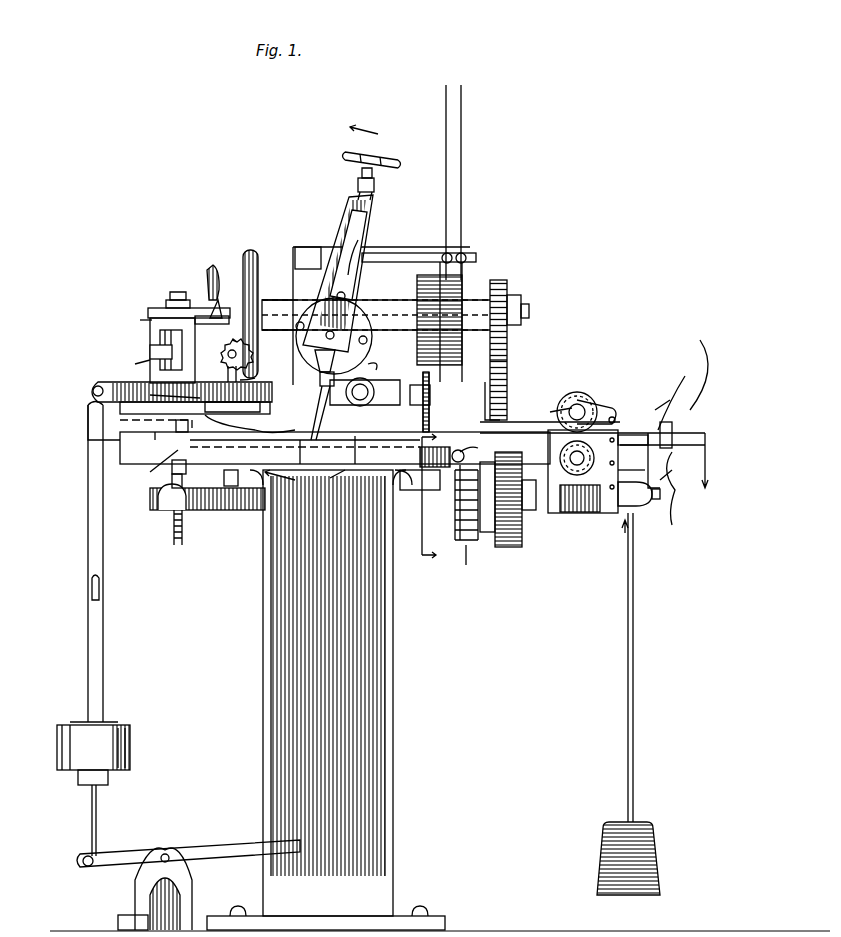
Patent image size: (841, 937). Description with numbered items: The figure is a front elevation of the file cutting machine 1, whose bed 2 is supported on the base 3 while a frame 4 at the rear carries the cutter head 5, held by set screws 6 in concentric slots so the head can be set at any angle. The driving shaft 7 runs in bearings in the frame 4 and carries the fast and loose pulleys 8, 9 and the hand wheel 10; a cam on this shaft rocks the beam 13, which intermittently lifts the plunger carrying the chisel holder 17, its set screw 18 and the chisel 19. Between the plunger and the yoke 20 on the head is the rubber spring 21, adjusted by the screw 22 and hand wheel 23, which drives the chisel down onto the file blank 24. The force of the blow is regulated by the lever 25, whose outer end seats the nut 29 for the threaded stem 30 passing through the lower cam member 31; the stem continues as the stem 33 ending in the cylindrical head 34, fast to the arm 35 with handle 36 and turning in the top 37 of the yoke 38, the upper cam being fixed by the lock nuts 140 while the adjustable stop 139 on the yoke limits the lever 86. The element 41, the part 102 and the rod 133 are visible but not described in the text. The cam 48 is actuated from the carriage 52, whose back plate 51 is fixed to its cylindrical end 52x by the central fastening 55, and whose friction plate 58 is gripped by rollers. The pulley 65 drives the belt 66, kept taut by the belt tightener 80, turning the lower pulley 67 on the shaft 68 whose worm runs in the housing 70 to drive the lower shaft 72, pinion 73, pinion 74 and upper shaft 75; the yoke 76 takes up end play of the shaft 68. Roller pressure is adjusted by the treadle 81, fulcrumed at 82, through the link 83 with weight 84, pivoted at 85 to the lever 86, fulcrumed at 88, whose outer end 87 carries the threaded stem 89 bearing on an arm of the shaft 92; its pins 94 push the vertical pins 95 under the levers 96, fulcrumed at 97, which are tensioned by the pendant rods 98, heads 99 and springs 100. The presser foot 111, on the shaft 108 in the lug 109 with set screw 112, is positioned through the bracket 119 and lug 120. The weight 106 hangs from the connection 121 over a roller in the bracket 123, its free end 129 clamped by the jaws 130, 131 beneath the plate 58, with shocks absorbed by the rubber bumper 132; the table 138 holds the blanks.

The file cutting machine 1 is at (483, 182).
The bed 2 is at (340, 480).
The base 3 is at (390, 618).
The frame 4 is at (329, 311).
The cutter head 5 is at (334, 333).
The set screws 6 is at (296, 330).
The driving shaft 7 is at (270, 292).
The fast pulley 8 is at (376, 320).
The loose pulley 9 is at (462, 274).
The hand wheel 10 is at (250, 256).
The beam 13 is at (440, 495).
The chisel holder 17 is at (290, 368).
The set screw 18 is at (317, 357).
The chisel 19 is at (324, 413).
The yoke 20 is at (358, 232).
The spring 21 is at (350, 248).
The screw 22 is at (356, 190).
The hand wheel 23 is at (393, 158).
The file blank 24 is at (335, 442).
The lever 25 is at (200, 505).
The nut 29 is at (172, 500).
The threaded stem 30 is at (162, 526).
The lower cam member 31 is at (130, 410).
The threaded stem 33 is at (150, 352).
The cylindrical head 34 is at (178, 300).
The arm 35 is at (214, 312).
The handle 36 is at (238, 253).
The top of yoke 37 is at (152, 310).
The yoke 38 is at (150, 340).
The bar 41 is at (212, 327).
The cam 48 is at (250, 438).
The back plate 51 is at (146, 462).
The carriage 52 is at (205, 432).
The end portion of carriage 52x is at (175, 470).
The central axial fastening 55 is at (170, 430).
The friction plate 58 is at (522, 440).
The pulley 65 is at (508, 296).
The belt 66 is at (508, 352).
The lower pulley 67 is at (490, 532).
The shaft 68 is at (520, 544).
The housing 70 is at (610, 514).
The lower shaft 72 is at (642, 465).
The pinion 73 is at (575, 458).
The pinion 74 is at (585, 404).
The shaft 75 is at (600, 410).
The yoke 76 is at (645, 508).
The belt tightener 80 is at (508, 397).
The treadle 81 is at (222, 848).
The fulcrum point 82 is at (165, 848).
The link 83 is at (105, 628).
The weight 84 is at (130, 734).
The pivotal connection 85 is at (88, 393).
The lever 86 is at (130, 400).
The outer end of lever 87 is at (412, 384).
The fulcrum point 88 is at (365, 407).
The threaded stem 89 is at (432, 396).
The shaft 92 is at (438, 470).
The toes, lugs or pins 94 is at (457, 498).
The vertical pins 95 is at (470, 453).
The levers 96 is at (550, 412).
The fulcrum points 97 is at (625, 422).
The pendant rods 98 is at (474, 439).
The head 99 is at (466, 565).
The spring 100 is at (455, 515).
The bracket 102 is at (353, 471).
The weight 106 is at (645, 820).
The shaft 108 is at (174, 395).
The lug 109 is at (232, 398).
The presser foot 111 is at (320, 452).
The set screw 112 is at (225, 372).
The bracket 119 is at (255, 373).
The lug 120 is at (64, 930).
The connection 121 is at (636, 610).
The bracket 123 is at (634, 440).
The free end of connection 129 is at (675, 448).
The upper jaw 130 is at (693, 369).
The lower jaw 131 is at (682, 497).
The rubber bumper 132 is at (686, 394).
The rod 133 is at (388, 252).
The table 138 is at (352, 450).
The adjustable stop 139 is at (140, 360).
The lock nuts 140 is at (140, 320).